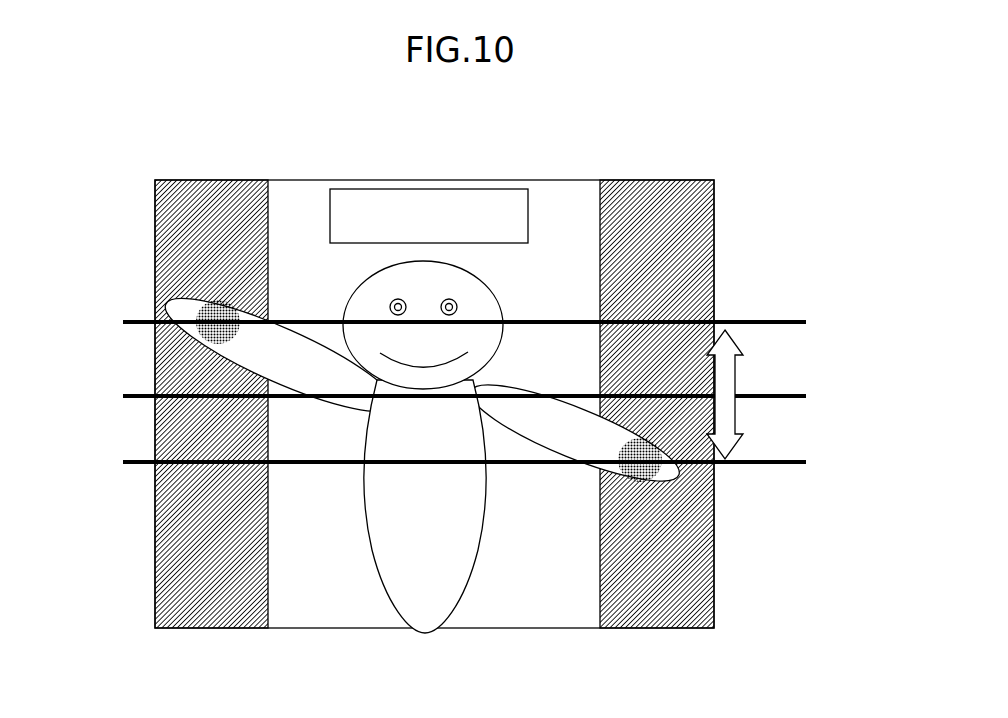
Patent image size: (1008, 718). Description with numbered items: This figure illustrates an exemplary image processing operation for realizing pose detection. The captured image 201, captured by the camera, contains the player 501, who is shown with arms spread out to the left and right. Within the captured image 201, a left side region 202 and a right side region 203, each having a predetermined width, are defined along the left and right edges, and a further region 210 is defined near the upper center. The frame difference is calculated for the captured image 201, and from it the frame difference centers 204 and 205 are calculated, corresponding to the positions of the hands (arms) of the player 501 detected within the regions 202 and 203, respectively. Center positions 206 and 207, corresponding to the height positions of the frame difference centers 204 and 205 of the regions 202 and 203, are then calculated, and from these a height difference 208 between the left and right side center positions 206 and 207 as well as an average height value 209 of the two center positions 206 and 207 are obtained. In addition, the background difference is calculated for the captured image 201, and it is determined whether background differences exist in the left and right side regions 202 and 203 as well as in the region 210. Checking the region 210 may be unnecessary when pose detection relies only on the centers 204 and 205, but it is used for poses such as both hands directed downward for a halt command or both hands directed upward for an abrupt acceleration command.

The captured image 201 is at (127, 225).
The left side region 202 is at (210, 189).
The right side region 203 is at (661, 190).
The frame difference center 204 is at (176, 305).
The frame difference center 205 is at (648, 484).
The center position 206 is at (806, 322).
The center position 207 is at (806, 462).
The height difference 208 is at (733, 425).
The average height value 209 is at (806, 396).
The region 210 is at (480, 188).
The player 501 is at (422, 617).